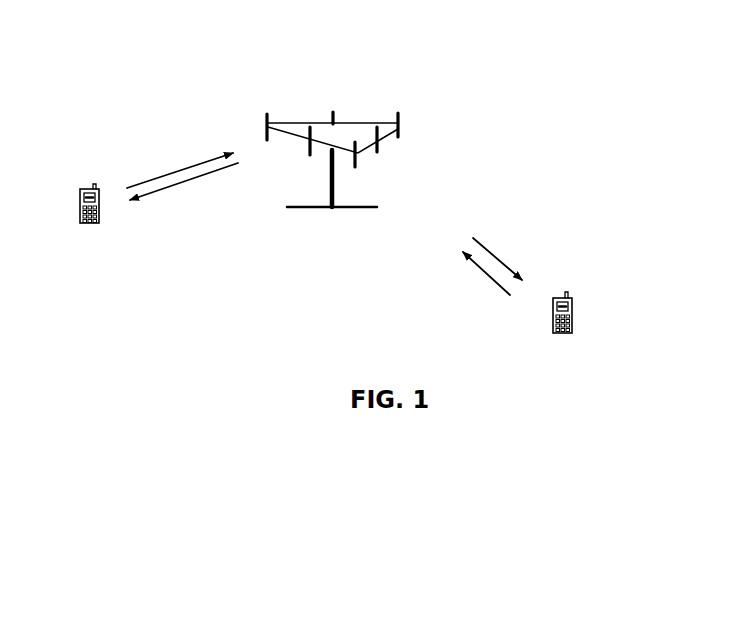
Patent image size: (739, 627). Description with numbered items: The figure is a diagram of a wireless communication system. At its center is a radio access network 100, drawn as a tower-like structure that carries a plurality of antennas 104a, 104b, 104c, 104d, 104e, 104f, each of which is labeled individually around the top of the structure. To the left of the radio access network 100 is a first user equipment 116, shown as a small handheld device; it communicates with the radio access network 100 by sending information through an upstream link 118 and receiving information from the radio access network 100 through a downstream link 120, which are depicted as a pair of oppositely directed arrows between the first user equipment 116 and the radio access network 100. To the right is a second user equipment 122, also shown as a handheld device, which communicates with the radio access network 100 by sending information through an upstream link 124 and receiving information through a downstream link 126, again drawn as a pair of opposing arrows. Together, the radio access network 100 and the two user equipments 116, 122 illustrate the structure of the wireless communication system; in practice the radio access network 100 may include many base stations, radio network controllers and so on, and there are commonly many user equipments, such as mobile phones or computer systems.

The radio access network 100 is at (312, 207).
The antenna 104a is at (355, 165).
The antenna 104b is at (377, 151).
The antenna 104c is at (398, 133).
The antenna 104d is at (333, 113).
The antenna 104e is at (267, 119).
The antenna 104f is at (310, 155).
The first user equipment 116 is at (92, 189).
The upstream link 118 is at (178, 172).
The downstream link 120 is at (192, 180).
The second user equipment 122 is at (566, 292).
The upstream link 124 is at (480, 266).
The downstream link 126 is at (495, 253).